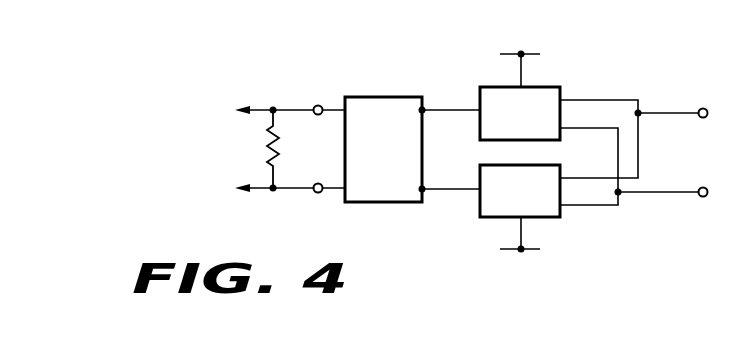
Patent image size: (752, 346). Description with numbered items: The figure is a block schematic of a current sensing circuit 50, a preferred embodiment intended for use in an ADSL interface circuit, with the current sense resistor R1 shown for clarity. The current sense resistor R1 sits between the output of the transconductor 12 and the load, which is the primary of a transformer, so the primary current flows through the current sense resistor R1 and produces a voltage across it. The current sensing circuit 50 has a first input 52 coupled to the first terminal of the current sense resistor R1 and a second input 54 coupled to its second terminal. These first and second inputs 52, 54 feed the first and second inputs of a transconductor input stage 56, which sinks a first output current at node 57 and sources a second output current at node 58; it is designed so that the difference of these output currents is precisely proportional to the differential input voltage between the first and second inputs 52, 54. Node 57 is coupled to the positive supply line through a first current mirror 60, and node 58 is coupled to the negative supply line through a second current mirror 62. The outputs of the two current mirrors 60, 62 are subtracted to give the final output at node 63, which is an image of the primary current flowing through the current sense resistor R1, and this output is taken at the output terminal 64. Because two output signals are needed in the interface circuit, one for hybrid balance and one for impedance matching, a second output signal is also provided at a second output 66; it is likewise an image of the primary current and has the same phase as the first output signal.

The transconductor 12 is at (143, 110).
The current sensing circuit 50 is at (113, 262).
The first input 52 is at (318, 105).
The second input 54 is at (318, 193).
The transconductor input stage 56 is at (397, 164).
The node 57 is at (423, 110).
The node 58 is at (423, 189).
The first current mirror 60 is at (533, 124).
The second current mirror 62 is at (533, 204).
The node 63 is at (639, 112).
The first output terminal 64 is at (703, 118).
The second output 66 is at (703, 197).
The current sense resistor R1 is at (289, 149).